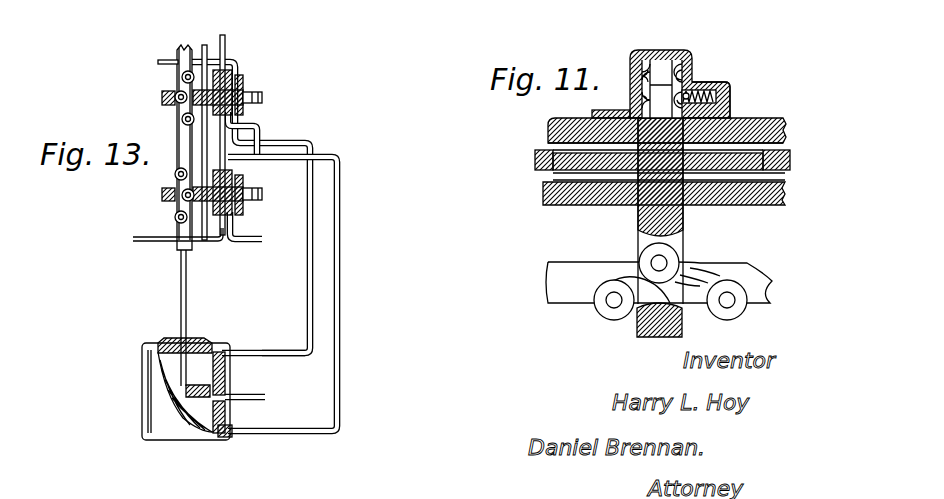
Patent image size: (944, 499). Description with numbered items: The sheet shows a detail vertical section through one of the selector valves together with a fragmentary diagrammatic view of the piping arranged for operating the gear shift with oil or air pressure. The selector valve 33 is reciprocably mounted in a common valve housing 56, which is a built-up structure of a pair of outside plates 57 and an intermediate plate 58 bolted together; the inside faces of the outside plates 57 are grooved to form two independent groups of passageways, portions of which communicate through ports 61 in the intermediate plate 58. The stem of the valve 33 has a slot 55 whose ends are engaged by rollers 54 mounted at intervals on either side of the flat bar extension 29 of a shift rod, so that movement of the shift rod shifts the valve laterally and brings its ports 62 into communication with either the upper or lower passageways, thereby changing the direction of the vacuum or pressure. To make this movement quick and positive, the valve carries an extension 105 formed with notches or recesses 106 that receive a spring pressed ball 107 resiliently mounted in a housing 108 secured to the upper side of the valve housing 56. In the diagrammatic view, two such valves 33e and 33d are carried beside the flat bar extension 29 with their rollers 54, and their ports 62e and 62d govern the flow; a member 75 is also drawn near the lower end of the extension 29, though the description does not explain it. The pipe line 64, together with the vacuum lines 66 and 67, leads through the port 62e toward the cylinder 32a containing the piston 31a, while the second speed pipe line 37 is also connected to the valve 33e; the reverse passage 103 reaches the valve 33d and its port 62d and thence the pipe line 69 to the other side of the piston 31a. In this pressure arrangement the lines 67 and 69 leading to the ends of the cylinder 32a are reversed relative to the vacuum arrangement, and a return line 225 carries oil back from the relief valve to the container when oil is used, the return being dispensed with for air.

In FIG. 13, the flat bar extension 29 is at (185, 47).
In FIG. 11, the flat bar extension 29 is at (573, 298).
In FIG. 13, the piston 31a is at (222, 386).
In FIG. 13, the cylinder 32a is at (145, 400).
In FIG. 11, the selector valve 33 is at (640, 228).
In FIG. 13, the selector valve 33d is at (162, 195).
In FIG. 13, the selector valve 33e is at (162, 98).
In FIG. 13, the second speed pipe line 37 is at (223, 48).
In FIG. 13, the rollers 54 is at (182, 119).
In FIG. 11, the rollers 54 is at (626, 318).
In FIG. 11, the slot 55 is at (684, 250).
In FIG. 13, the valve housing 56 is at (240, 78).
In FIG. 11, the valve housing 56 is at (541, 217).
In FIG. 11, the outside plates 57 is at (548, 133).
In FIG. 11, the intermediate plate 58 is at (535, 160).
In FIG. 11, the ports 61 is at (560, 158).
In FIG. 11, the ports 62 is at (726, 120).
In FIG. 13, the port 62d is at (248, 193).
In FIG. 13, the port 62e is at (262, 97).
In FIG. 13, the pipe line 64 is at (160, 62).
In FIG. 13, the vacuum line 66 is at (280, 142).
In FIG. 13, the vacuum line 67 is at (339, 282).
In FIG. 13, the pipe line 69 is at (240, 356).
In FIG. 13, the rod 75 is at (219, 246).
In FIG. 13, the reverse passage 103 is at (260, 246).
In FIG. 13, the extension 105 is at (242, 112).
In FIG. 11, the extension 105 is at (690, 88).
In FIG. 11, the notches or recesses 106 is at (650, 70).
In FIG. 11, the spring pressed ball 107 is at (700, 95).
In FIG. 11, the housing 108 is at (665, 92).
In FIG. 13, the return line 225 is at (238, 400).